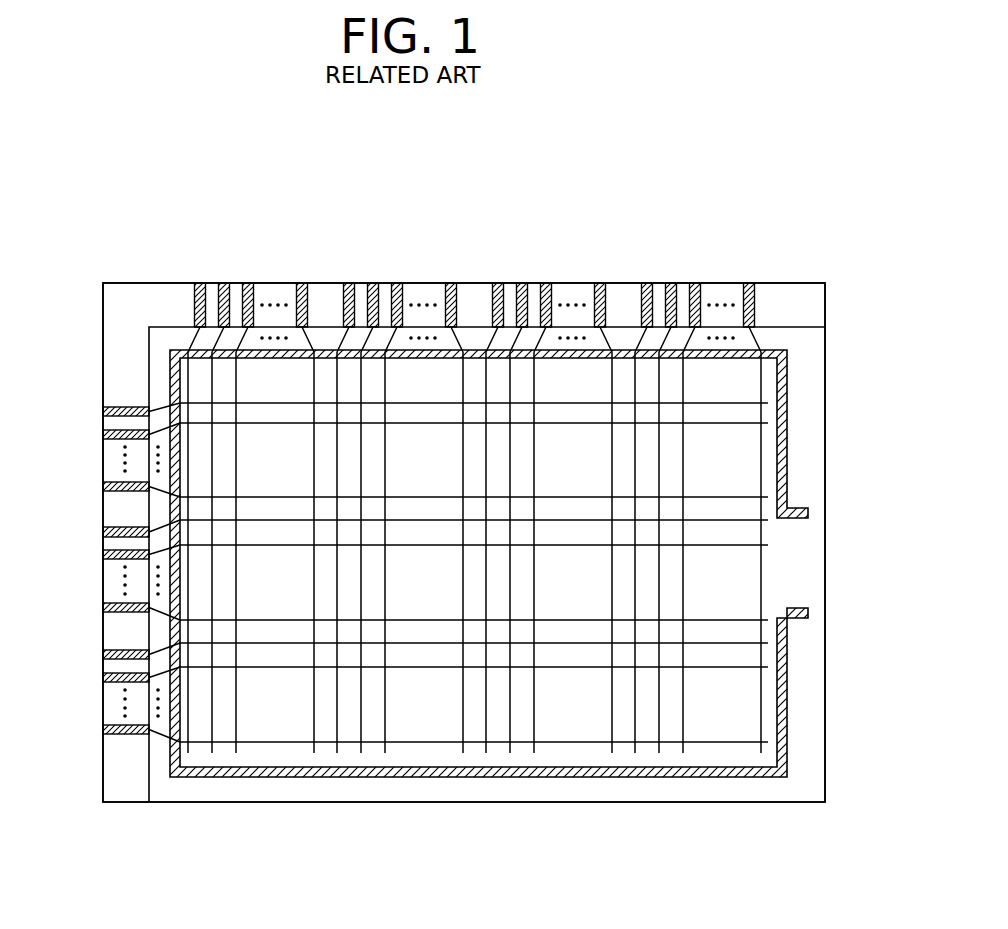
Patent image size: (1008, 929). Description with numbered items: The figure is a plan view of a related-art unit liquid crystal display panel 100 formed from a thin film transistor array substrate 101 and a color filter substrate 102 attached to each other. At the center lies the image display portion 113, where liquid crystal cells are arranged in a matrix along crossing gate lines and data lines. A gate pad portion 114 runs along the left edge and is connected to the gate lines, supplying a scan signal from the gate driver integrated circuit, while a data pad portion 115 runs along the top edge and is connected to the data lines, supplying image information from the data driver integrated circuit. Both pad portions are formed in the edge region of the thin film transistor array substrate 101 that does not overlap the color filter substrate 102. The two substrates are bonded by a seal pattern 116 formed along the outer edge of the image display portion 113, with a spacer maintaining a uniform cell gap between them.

The liquid crystal display panel 100 is at (134, 271).
The thin film transistor array substrate 101 is at (812, 305).
The color filter substrate 102 is at (812, 366).
The image display portion 113 is at (443, 473).
The gate pad portion 114 is at (93, 740).
The data pad portion 115 is at (758, 267).
The seal pattern 116 is at (780, 434).